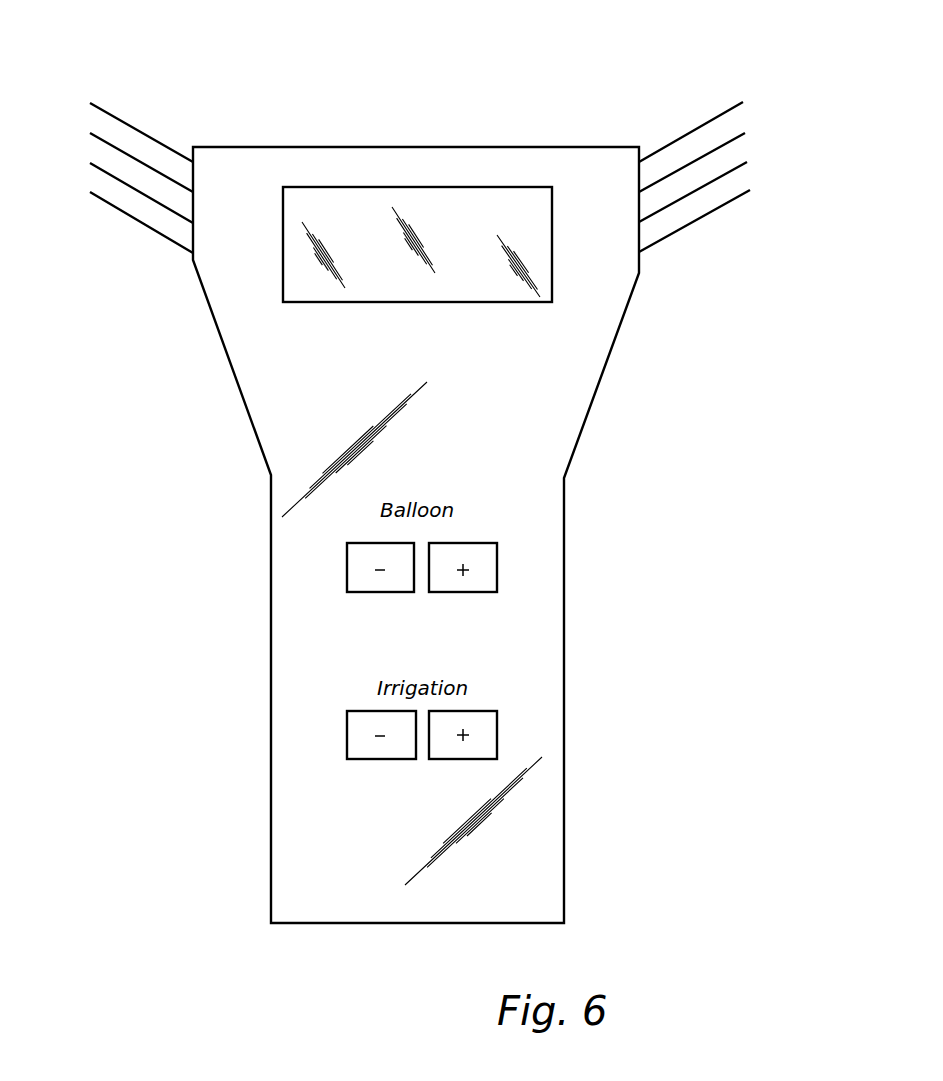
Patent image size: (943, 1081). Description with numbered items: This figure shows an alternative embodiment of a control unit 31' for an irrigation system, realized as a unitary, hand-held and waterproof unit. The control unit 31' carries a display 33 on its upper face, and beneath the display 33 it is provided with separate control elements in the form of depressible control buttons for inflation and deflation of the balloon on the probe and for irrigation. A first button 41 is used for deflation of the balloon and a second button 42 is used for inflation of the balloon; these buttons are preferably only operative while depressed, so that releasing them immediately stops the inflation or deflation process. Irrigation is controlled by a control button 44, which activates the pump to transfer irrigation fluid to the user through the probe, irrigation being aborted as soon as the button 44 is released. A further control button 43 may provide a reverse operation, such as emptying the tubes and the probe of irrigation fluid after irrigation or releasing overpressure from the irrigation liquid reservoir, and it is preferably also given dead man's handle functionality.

The control unit 31' is at (420, 512).
The display 33 is at (486, 205).
The first button 41 is at (353, 558).
The second button 42 is at (485, 567).
The further control button 43 is at (353, 740).
The control button 44 is at (485, 743).